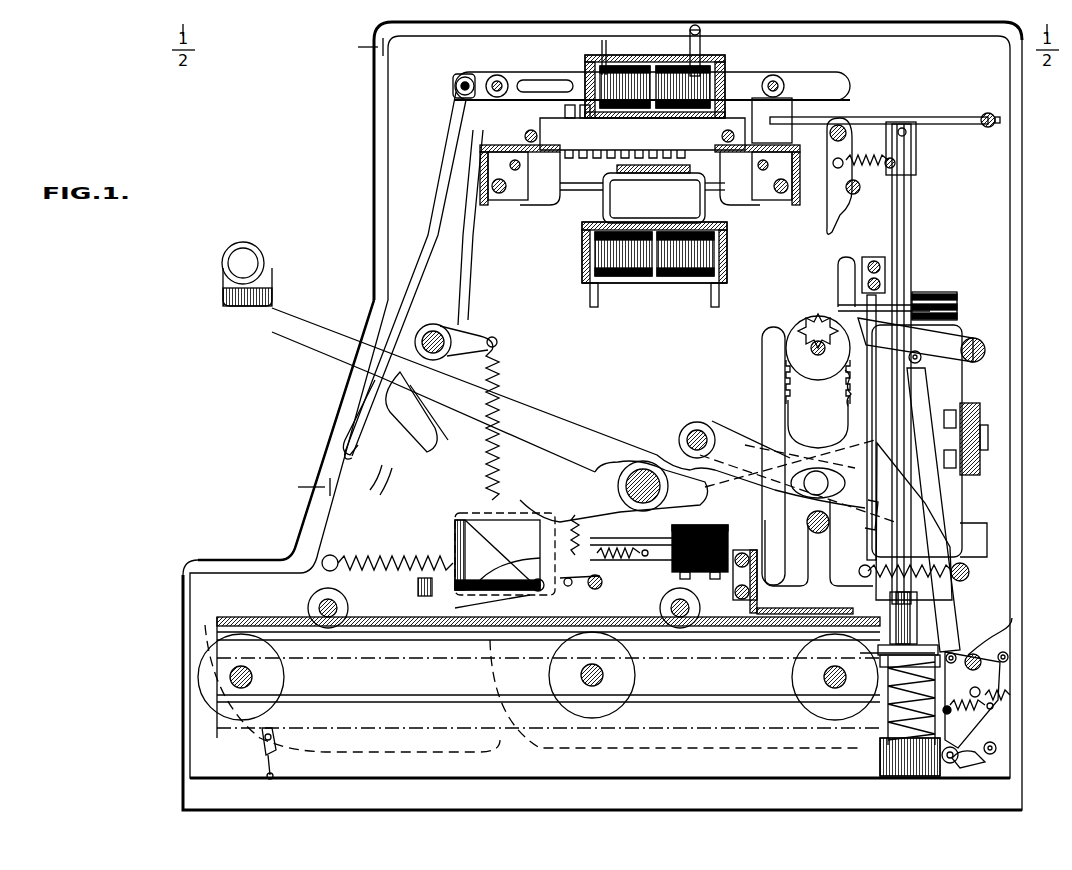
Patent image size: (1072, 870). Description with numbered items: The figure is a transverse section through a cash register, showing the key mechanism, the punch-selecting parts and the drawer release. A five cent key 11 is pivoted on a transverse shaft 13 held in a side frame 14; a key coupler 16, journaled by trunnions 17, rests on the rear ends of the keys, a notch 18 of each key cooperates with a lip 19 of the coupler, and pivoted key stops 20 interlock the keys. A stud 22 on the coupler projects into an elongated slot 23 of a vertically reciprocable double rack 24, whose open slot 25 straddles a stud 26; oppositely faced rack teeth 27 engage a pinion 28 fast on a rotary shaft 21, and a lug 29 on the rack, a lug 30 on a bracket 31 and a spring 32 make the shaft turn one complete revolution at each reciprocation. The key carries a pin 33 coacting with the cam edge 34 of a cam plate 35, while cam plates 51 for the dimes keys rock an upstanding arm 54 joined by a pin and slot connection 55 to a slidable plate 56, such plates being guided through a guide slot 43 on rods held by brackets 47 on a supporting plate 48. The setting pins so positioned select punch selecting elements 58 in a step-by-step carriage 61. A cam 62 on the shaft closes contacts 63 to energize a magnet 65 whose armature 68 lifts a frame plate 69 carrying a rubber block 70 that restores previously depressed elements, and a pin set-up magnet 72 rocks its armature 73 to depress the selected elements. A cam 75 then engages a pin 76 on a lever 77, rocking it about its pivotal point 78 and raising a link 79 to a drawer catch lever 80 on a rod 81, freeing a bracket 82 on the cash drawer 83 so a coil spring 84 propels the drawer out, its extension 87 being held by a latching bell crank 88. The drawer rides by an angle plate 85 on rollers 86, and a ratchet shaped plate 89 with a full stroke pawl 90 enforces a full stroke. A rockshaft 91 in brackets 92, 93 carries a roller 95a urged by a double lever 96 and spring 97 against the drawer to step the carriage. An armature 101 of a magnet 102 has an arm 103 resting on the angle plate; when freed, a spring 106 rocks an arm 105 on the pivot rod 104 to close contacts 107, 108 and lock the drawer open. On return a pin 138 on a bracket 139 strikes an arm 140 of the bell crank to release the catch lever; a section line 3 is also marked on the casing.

The section line 3 is at (380, 49).
The five cent key 11 is at (222, 298).
The transverse shaft 13 is at (643, 470).
The side frame 14 is at (396, 178).
The key coupler 16 is at (726, 440).
The trunnions 17 is at (690, 428).
The notch 18 is at (880, 512).
The lip 19 is at (852, 522).
The key stops 20 is at (975, 492).
The rotary shaft 21 is at (810, 330).
The stud 22 is at (840, 485).
The elongated slot 23 is at (820, 495).
The double rack 24 is at (806, 452).
The open slot 25 is at (800, 612).
The stud 26 is at (818, 530).
The rack teeth 27 is at (846, 404).
The pinion 28 is at (762, 340).
The lug 29 is at (865, 320).
The lug 30 is at (864, 256).
The bracket 31 is at (885, 262).
The spring 32 is at (950, 583).
The pin 33 is at (420, 376).
The cam edge 34 is at (410, 438).
The cam plate 35 is at (343, 445).
The guide slot 43 is at (325, 488).
The brackets 47 is at (450, 127).
The supporting plate 48 is at (512, 198).
The cam plates 51 is at (381, 487).
The upstanding arm 54 is at (466, 262).
The pin and slot connection 55 is at (466, 77).
The slidably mounted plate 56 is at (530, 75).
The punch selecting elements 58 is at (600, 152).
The carriage 61 is at (540, 128).
The cam 62 is at (876, 348).
The contacts 63 is at (838, 282).
The magnet 65 is at (672, 262).
The armature 68 is at (676, 285).
The frame plate 69 is at (598, 207).
The block 70 is at (665, 172).
The pin set-up magnet 72 is at (700, 88).
The armature 73 is at (626, 52).
The cam 75 is at (790, 392).
The pin 76 is at (818, 316).
The lever 77 is at (930, 294).
The pivotal point 78 is at (975, 340).
The link 79 is at (928, 468).
The drawer catch lever 80 is at (1002, 632).
The rod 81 is at (982, 658).
The bracket 82 is at (910, 700).
The cash drawer 83 is at (185, 634).
The coil spring 84 is at (922, 722).
The angle plate 85 is at (350, 650).
The rollers 86 is at (308, 604).
The extension 87 is at (1012, 680).
The latching bell crank 88 is at (1008, 655).
The ratchet shaped plate 89 is at (520, 720).
The full stroke pawl 90 is at (262, 745).
The rockshaft 91 is at (912, 200).
The bracket 92 is at (916, 157).
The bracket 93 is at (917, 610).
The roller 95a is at (935, 648).
The double lever 96 is at (876, 118).
The spring 97 is at (984, 113).
The armature 101 is at (458, 586).
The magnet 102 is at (455, 532).
The arm 103 is at (418, 592).
The pivot rod 104 is at (545, 592).
The arm 105 is at (600, 588).
The spring 106 is at (582, 525).
The contacts 107 is at (600, 545).
The contacts 108 is at (655, 565).
The pin 138 is at (950, 765).
The bracket 139 is at (912, 768).
The arm 140 is at (1000, 752).